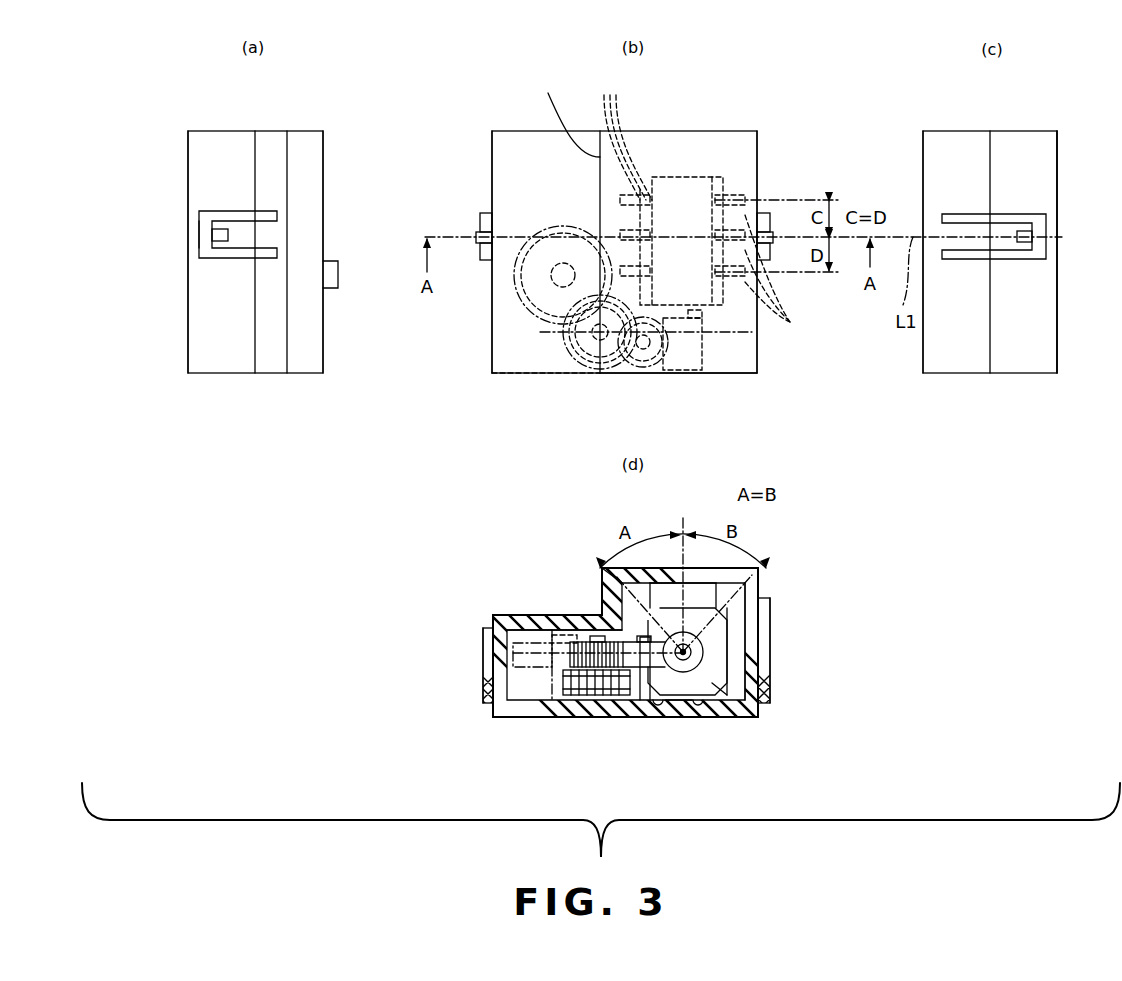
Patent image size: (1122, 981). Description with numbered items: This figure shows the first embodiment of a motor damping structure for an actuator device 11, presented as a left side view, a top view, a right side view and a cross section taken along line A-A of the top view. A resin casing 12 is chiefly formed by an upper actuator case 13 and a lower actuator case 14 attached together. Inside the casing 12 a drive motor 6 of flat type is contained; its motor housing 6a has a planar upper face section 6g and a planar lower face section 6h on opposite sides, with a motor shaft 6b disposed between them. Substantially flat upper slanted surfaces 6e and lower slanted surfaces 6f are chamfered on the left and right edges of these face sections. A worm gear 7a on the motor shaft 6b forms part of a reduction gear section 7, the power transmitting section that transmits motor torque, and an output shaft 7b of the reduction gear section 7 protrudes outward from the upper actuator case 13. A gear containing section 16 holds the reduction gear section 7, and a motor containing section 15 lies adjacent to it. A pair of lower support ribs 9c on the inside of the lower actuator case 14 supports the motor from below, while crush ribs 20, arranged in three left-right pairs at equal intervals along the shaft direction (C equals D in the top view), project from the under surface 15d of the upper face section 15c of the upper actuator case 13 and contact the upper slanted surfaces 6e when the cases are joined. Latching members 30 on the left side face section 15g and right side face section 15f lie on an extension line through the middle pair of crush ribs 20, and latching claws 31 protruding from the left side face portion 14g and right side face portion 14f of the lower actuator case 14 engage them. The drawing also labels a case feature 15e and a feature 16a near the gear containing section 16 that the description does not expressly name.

The drive motor 6 is at (688, 176).
The motor housing 6a is at (710, 305).
The motor shaft 6b is at (705, 322).
The upper slanted surface 6e is at (628, 195).
The lower slanted surface 6f is at (643, 702).
The upper face section 6g is at (736, 586).
The lower face section 6h is at (683, 701).
The reduction gear section 7 is at (578, 362).
The worm gear 7a is at (683, 360).
The output shaft 7b is at (335, 246).
The lower support rib 9c is at (658, 706).
The actuator device 11 is at (708, 126).
The casing 12 is at (206, 423).
The upper actuator case 13 is at (299, 378).
The lower actuator case 14 is at (228, 378).
The right side face portion 14f is at (1030, 281).
The left side face portion 14g is at (212, 252).
The motor containing section 15 is at (738, 314).
The upper face section 15c is at (603, 568).
The under surface 15d is at (690, 606).
The partition wall 15e is at (558, 115).
The right side face section 15f is at (758, 166).
The left side face section 15g is at (285, 175).
The gear containing section 16 is at (535, 698).
The gear chamber ceiling 16a is at (556, 615).
The crush rib 20 is at (678, 648).
The latching member 30 is at (210, 212).
The latching claw 31 is at (212, 235).